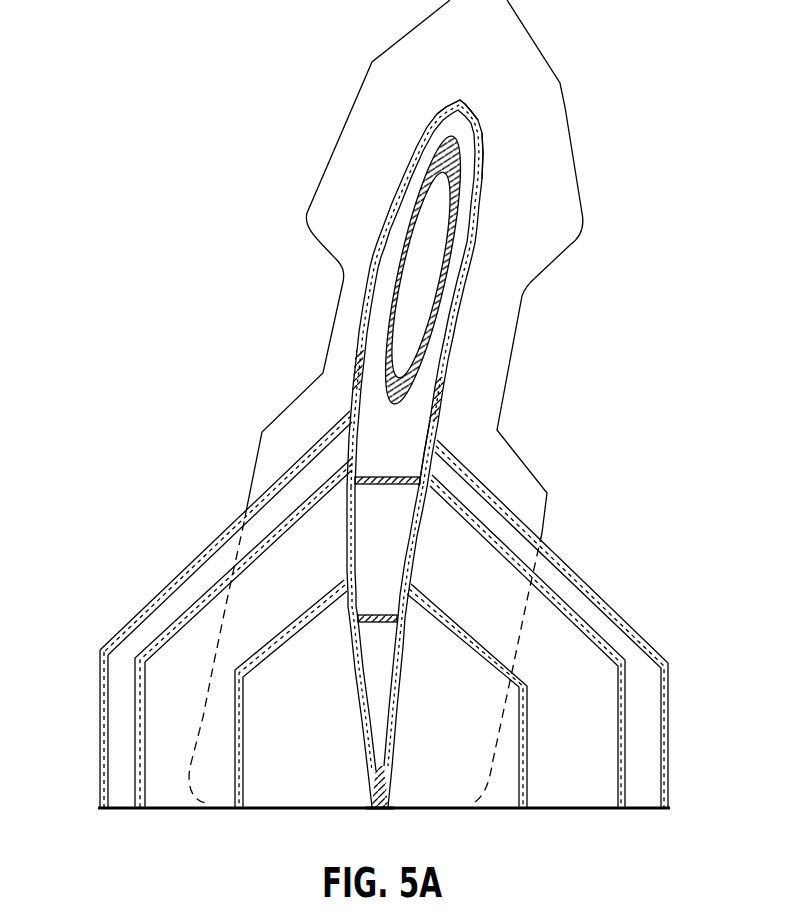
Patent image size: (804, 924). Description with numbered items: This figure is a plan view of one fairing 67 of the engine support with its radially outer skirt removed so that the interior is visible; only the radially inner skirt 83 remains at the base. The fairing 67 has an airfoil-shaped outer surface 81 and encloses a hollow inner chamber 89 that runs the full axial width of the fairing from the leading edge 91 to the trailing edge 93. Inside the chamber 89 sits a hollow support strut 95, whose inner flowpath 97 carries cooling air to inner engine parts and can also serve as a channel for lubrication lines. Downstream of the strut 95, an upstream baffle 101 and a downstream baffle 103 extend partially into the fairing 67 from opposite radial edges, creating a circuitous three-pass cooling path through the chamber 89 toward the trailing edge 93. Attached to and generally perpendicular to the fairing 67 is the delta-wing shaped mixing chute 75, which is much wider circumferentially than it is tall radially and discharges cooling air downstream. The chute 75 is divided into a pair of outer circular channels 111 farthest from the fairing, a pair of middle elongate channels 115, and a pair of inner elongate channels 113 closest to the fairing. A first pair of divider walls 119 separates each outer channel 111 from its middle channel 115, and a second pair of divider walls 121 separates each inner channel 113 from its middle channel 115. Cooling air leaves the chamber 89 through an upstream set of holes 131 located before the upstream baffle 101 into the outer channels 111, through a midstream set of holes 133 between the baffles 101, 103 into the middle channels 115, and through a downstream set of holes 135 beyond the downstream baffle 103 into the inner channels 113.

The fairing 67 is at (492, 141).
The mixing chute 75 is at (210, 536).
The outer surface 81 is at (460, 338).
The radially inner skirt 83 is at (560, 83).
The hollow inner chamber 89 is at (403, 423).
The leading edge 91 is at (462, 99).
The trailing edge 93 is at (381, 811).
The support strut 95 is at (407, 270).
The inner flowpath 97 is at (438, 223).
The upstream baffle 101 is at (390, 477).
The downstream baffle 103 is at (375, 613).
The outer circular channels 111 is at (147, 625).
The inner elongate channels 113 is at (297, 783).
The middle elongate channels 115 is at (167, 703).
The first pair of divider walls 119 is at (197, 597).
The second pair of divider walls 121 is at (300, 610).
The upstream set of holes 131 is at (423, 450).
The midstream set of holes 133 is at (412, 523).
The downstream set of holes 135 is at (350, 650).